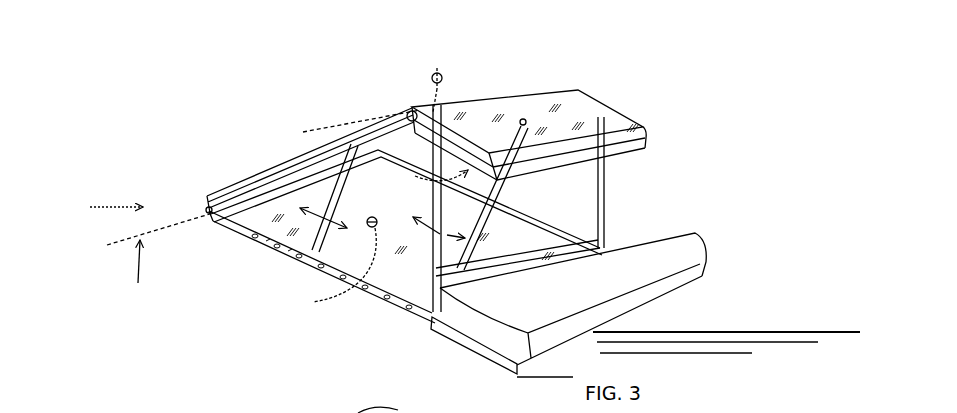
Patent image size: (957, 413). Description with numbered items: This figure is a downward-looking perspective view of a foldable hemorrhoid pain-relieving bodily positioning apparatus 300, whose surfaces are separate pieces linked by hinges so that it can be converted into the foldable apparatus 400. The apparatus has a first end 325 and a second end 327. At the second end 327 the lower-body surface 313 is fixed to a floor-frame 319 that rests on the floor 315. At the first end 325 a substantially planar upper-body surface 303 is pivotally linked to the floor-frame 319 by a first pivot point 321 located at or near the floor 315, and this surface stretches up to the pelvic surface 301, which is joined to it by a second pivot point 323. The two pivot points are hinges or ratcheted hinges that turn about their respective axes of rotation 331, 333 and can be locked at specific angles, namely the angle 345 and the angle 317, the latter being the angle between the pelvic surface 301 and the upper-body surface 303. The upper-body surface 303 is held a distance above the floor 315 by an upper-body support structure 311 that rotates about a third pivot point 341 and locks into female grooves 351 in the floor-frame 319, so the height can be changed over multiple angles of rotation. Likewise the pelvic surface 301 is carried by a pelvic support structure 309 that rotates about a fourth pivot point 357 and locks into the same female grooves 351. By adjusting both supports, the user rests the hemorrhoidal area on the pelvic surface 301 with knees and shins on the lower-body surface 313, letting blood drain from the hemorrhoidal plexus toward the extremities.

The bodily positioning apparatus 300 is at (703, 98).
The pelvic surface 301 is at (562, 108).
The upper-body surface 303 is at (255, 168).
The pelvic support structure 309 is at (405, 302).
The upper-body support structure 311 is at (318, 258).
The lower-body surface 313 is at (603, 260).
The floor 315 is at (772, 330).
The angle 317 is at (443, 58).
The floor-frame 319 is at (420, 315).
The first pivot point 321 is at (195, 212).
The second pivot point 323 is at (383, 113).
The first end 325 is at (99, 207).
The second end 327 is at (493, 372).
The axis of rotation 331 is at (160, 256).
The axis of rotation 333 is at (325, 122).
The third pivot point 341 is at (367, 97).
The angle of rotation 345 is at (352, 272).
The female grooves 351 is at (297, 262).
The fourth pivot point 357 is at (443, 137).
The foldable apparatus 400 is at (252, 410).